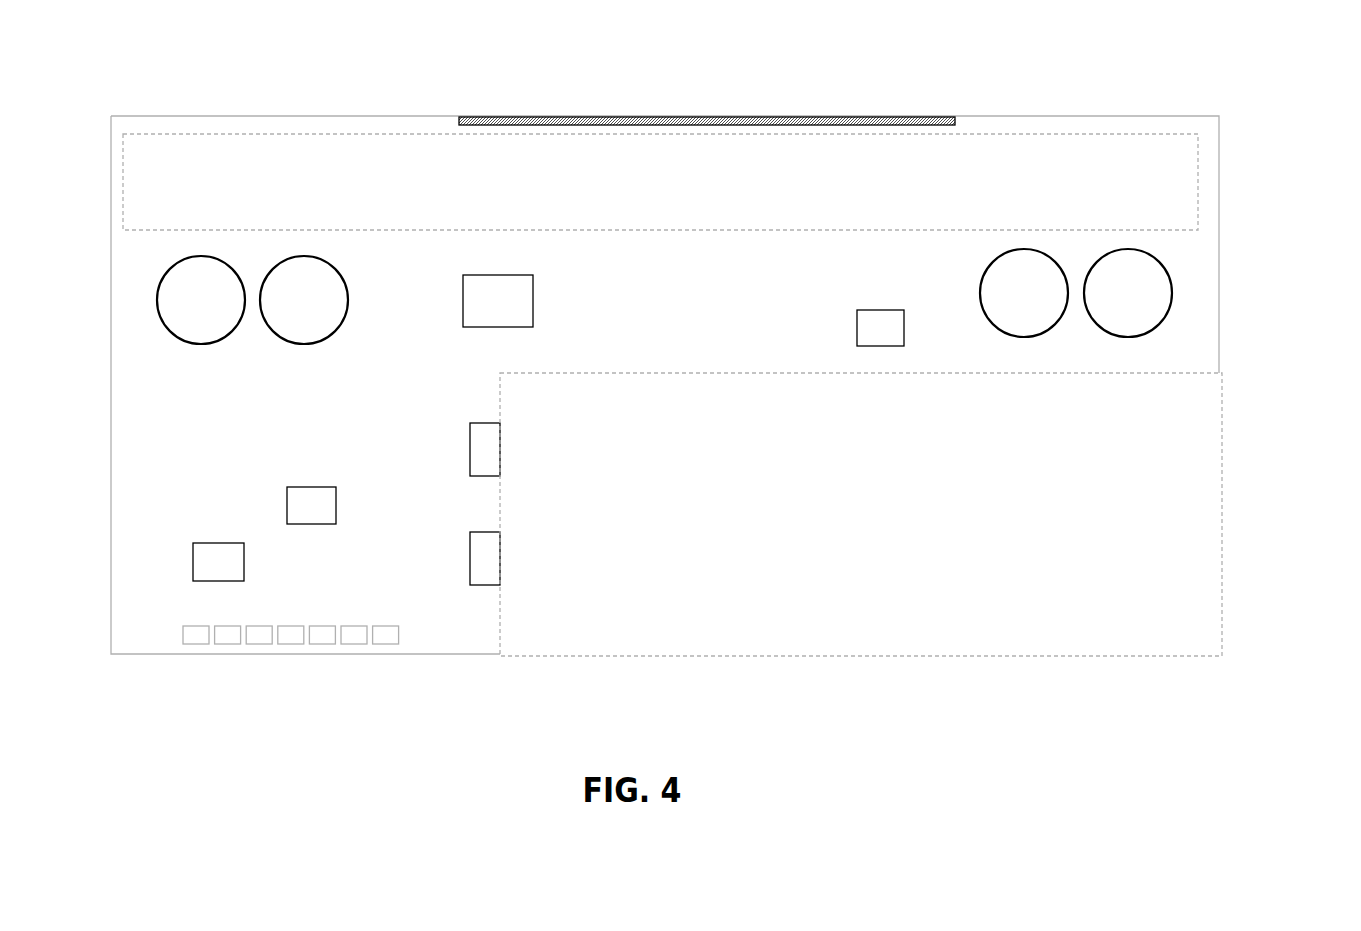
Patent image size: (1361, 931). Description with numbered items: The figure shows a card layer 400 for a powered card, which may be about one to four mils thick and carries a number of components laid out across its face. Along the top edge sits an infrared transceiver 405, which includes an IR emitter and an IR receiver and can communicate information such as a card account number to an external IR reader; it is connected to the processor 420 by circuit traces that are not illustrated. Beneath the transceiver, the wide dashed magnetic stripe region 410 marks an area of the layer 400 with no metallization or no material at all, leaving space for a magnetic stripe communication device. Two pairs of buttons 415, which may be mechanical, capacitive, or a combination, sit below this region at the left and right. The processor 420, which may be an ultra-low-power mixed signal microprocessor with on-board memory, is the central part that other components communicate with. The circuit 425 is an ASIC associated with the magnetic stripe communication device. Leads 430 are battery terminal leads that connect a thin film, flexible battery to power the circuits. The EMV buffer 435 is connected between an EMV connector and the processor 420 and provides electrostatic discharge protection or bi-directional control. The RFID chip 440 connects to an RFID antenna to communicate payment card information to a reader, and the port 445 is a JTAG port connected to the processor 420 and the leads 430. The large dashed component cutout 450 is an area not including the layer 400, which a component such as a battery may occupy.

The layer 400 is at (1329, 399).
The infrared (IR) transceiver 405 is at (497, 116).
The magnetic stripe region 410 is at (121, 197).
The buttons 415 is at (252, 330).
The processor 420 is at (466, 303).
The circuit 425 is at (858, 315).
The leads 430 is at (471, 444).
The EMV buffer 435 is at (302, 487).
The RFID chip 440 is at (193, 555).
The port 445 is at (382, 618).
The component cutout 450 is at (861, 652).